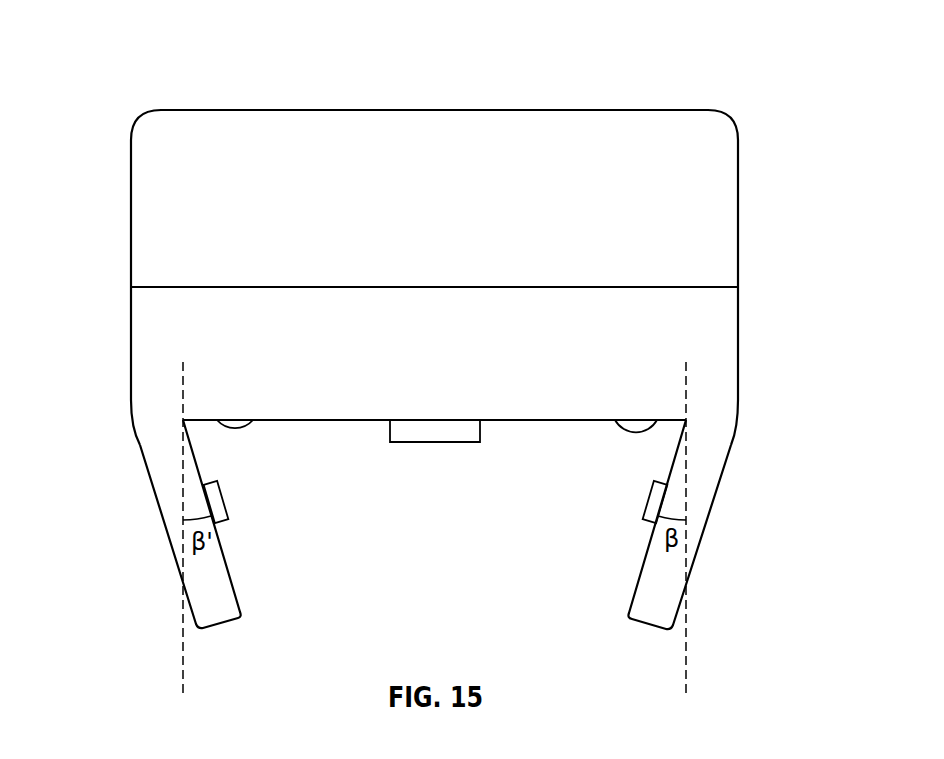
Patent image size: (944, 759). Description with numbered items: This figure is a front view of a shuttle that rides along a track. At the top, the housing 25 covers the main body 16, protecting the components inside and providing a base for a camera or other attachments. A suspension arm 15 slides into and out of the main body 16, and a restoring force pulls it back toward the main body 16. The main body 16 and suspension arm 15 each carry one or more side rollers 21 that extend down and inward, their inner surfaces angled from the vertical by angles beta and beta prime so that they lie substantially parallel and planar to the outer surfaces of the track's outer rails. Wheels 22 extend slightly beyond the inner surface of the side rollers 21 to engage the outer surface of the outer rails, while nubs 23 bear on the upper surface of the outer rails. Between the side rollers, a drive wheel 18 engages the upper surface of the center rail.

The suspension arm 15 is at (713, 385).
The main body 16 is at (153, 303).
The drive wheel 18 is at (433, 430).
The side rollers 21 is at (153, 442).
The wheels 22 is at (226, 500).
The nubs 23 is at (236, 428).
The housing 25 is at (713, 201).